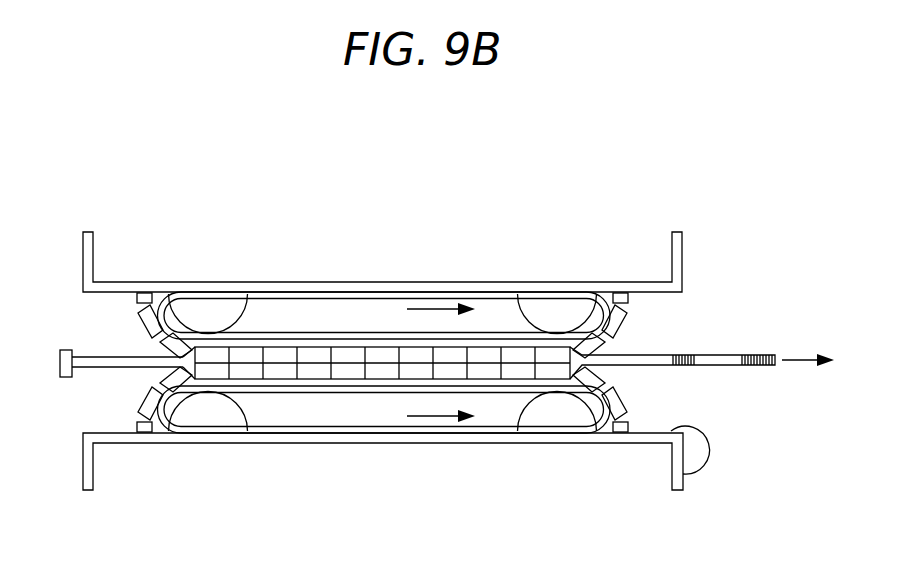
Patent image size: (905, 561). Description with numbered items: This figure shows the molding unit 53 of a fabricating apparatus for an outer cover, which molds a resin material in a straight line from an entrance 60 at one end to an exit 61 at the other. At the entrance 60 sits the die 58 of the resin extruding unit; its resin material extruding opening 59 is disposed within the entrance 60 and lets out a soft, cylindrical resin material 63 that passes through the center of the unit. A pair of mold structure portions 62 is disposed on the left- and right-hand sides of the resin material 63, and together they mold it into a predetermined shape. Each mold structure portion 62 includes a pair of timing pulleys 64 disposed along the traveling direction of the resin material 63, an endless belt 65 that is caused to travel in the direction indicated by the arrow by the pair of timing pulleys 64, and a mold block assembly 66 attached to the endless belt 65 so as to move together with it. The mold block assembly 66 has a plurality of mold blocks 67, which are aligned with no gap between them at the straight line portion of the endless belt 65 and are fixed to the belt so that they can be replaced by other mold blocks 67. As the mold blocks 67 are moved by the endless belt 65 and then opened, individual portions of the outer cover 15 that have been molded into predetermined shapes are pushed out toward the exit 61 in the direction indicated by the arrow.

The molding unit 53 is at (549, 164).
The entrance 60 is at (95, 304).
The exit 61 is at (668, 304).
The mold structure portions 62 is at (365, 306).
The resin material 63 is at (118, 366).
The timing pulleys 64 is at (207, 306).
The endless belt 65 is at (281, 338).
The mold block assembly 66 is at (623, 327).
The mold blocks 67 is at (350, 350).
The die 58 is at (59, 345).
The resin material extruding opening 59 is at (61, 352).
The outer cover 15 is at (714, 357).